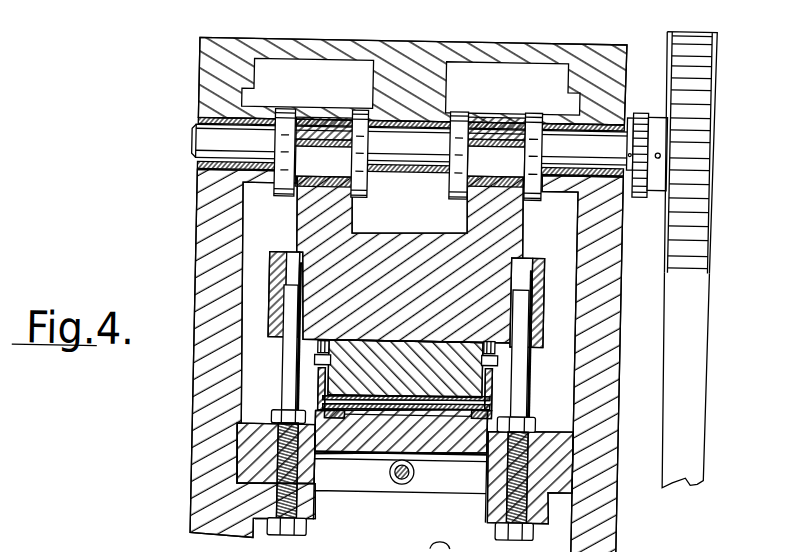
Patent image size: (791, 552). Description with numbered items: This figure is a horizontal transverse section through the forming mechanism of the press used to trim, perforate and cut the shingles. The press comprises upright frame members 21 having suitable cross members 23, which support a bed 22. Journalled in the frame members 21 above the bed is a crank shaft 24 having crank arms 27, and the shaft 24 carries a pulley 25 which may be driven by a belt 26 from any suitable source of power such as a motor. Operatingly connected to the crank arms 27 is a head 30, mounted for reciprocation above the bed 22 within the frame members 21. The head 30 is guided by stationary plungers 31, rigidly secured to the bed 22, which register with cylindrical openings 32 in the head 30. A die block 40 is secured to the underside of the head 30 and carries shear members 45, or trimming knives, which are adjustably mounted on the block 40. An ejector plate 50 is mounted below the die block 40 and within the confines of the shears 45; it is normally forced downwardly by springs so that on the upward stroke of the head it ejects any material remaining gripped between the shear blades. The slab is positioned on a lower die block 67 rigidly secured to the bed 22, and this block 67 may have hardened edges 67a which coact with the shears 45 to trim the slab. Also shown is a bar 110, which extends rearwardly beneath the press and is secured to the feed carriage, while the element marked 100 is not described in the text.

The upright frame members 21 is at (201, 260).
The bed 22 is at (377, 415).
The cross members 23 is at (444, 33).
The crank shaft 24 is at (201, 147).
The pulley 25 is at (716, 192).
The belt 26 is at (697, 300).
The crank arms 27 is at (408, 155).
The head 30 is at (511, 234).
The stationary plungers 31 is at (291, 358).
The cylindrical openings 32 is at (286, 254).
The die block 40 is at (352, 380).
The shear members 45 is at (325, 404).
The ejector plate 50 is at (452, 404).
The lower die block 67 is at (384, 416).
The hardened edges 67a is at (338, 419).
The hub 100 is at (638, 109).
The bar 110 is at (405, 485).